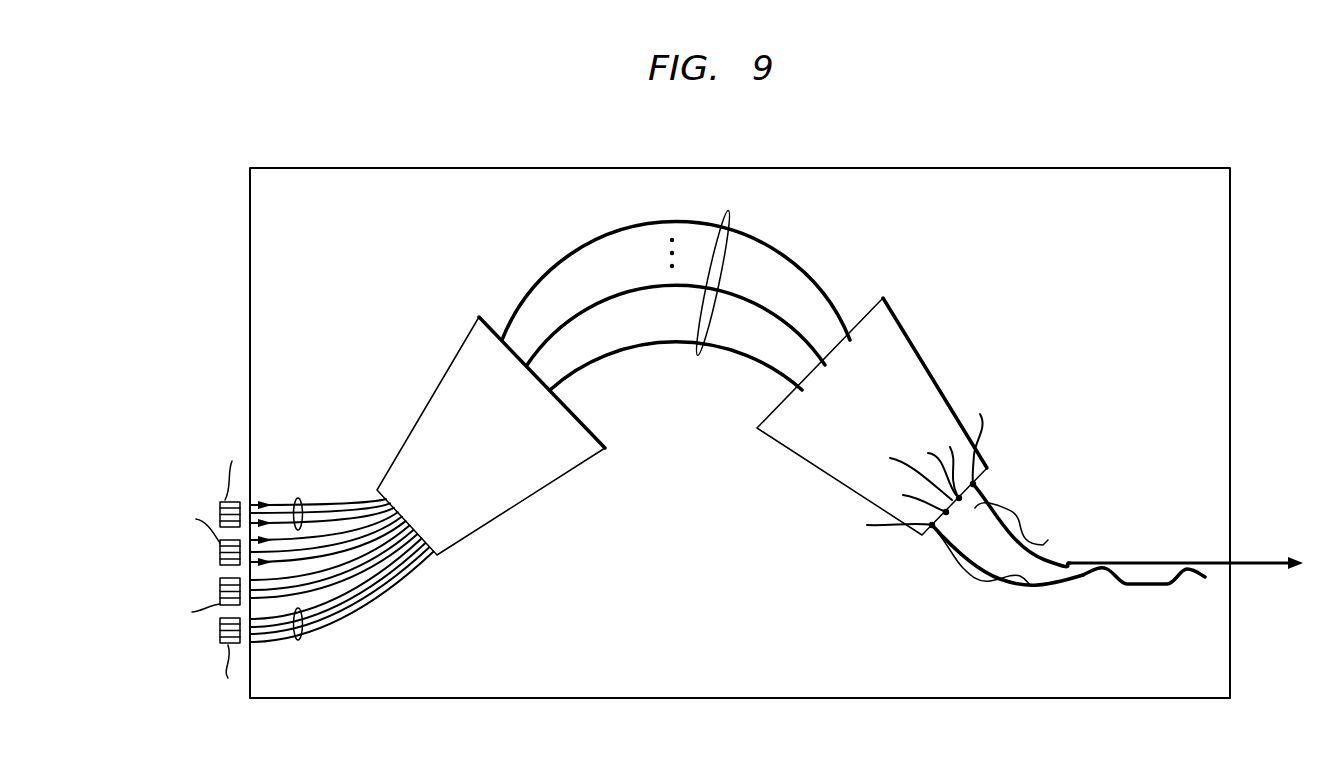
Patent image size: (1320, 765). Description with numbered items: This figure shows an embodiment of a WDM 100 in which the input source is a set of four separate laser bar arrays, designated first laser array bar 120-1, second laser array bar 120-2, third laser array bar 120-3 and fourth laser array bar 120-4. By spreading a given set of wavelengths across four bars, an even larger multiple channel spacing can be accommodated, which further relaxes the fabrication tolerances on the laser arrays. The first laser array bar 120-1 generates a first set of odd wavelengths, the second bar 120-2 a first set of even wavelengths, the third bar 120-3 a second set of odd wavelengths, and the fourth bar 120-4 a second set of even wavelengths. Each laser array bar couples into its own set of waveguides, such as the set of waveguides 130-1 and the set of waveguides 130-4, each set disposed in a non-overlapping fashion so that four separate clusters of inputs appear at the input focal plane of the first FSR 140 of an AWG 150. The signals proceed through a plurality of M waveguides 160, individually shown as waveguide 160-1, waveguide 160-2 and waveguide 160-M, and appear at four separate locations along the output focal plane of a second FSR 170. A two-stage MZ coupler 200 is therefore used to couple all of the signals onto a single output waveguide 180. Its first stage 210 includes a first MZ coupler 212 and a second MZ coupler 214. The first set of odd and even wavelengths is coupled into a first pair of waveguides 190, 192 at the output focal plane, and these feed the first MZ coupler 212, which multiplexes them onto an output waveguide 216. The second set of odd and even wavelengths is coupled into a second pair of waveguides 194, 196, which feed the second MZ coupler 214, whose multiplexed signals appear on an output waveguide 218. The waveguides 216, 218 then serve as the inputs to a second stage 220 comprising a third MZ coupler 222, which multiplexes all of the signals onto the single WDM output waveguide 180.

The WDM 100 is at (1042, 149).
The AWG 150 is at (318, 182).
The first laser array bar 120-1 is at (221, 502).
The second laser array bar 120-2 is at (220, 552).
The third laser array bar 120-3 is at (220, 592).
The fourth laser array bar 120-4 is at (220, 632).
The set of waveguides 130-1 is at (298, 498).
The set of waveguides 130-4 is at (303, 639).
The first FSR 140 is at (465, 367).
The plurality of M waveguides 160 is at (730, 212).
The waveguide 160-1 is at (582, 370).
The waveguide 160-2 is at (585, 310).
The waveguide 160-M is at (553, 268).
The second FSR 170 is at (893, 335).
The output waveguide 180 is at (1263, 562).
The waveguide 190 is at (936, 530).
The waveguide 192 is at (909, 496).
The waveguide 194 is at (928, 467).
The waveguide 196 is at (978, 505).
The two-stage MZ coupler 200 is at (1031, 538).
The first stage 210 is at (1029, 497).
The first MZ coupler 212 is at (960, 575).
The second MZ coupler 214 is at (1058, 510).
The output waveguide 216 is at (1056, 583).
The output waveguide 218 is at (1075, 560).
The second stage 220 is at (1215, 586).
The third MZ coupler 222 is at (1182, 534).